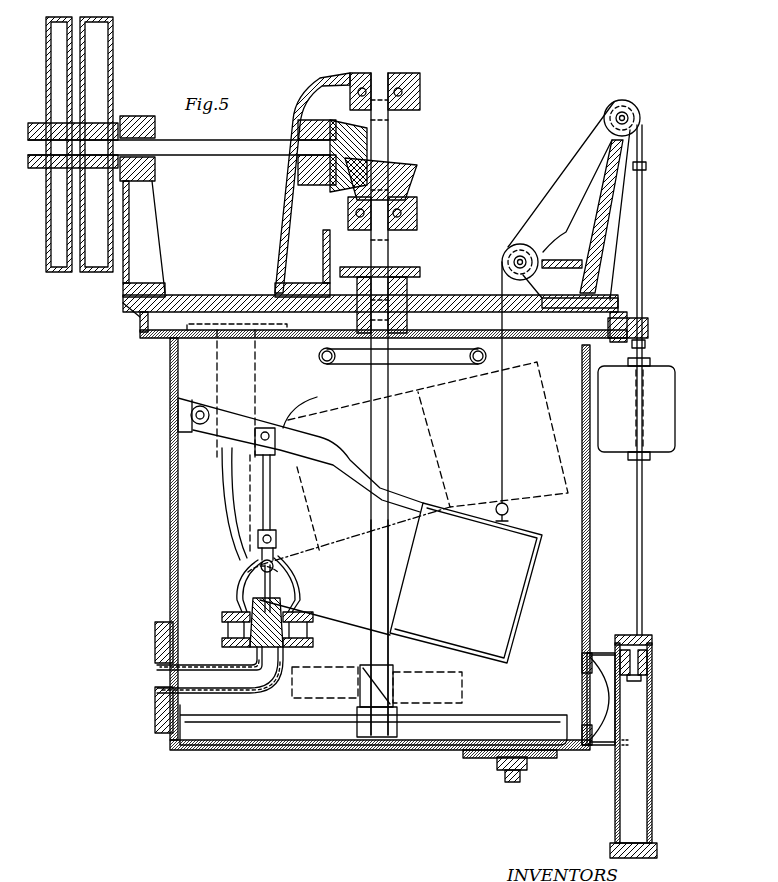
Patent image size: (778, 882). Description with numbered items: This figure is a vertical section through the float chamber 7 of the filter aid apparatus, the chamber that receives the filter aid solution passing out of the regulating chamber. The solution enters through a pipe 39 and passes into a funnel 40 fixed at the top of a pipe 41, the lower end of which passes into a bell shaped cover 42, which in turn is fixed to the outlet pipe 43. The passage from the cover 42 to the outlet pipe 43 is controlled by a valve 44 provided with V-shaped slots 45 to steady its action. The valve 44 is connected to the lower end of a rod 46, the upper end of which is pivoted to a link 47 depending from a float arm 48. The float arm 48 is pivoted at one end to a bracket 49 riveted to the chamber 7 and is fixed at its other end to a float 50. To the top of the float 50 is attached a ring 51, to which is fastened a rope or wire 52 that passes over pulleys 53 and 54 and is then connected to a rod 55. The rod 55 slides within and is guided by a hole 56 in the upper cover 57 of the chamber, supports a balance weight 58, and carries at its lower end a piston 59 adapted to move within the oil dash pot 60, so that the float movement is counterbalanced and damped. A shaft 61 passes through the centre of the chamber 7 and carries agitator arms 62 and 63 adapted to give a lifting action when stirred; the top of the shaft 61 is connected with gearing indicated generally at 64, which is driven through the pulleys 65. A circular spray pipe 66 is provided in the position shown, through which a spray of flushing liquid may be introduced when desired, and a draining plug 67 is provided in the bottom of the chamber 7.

The float chamber 7 is at (173, 487).
The pipe 39 is at (220, 388).
The funnel 40 is at (217, 440).
The pipe 41 is at (232, 533).
The bell shaped cover 42 is at (233, 593).
The outlet pipe 43 is at (197, 663).
The valve 44 is at (280, 605).
The V-shaped slots 45 is at (283, 667).
The rod 46 is at (277, 557).
The link 47 is at (245, 493).
The float arm 48 is at (283, 427).
The bracket 49 is at (190, 418).
The float 50 is at (553, 503).
The ring 51 is at (510, 512).
The rope or wire 52 is at (503, 463).
The pulley 53 is at (513, 248).
The pulley 54 is at (628, 103).
The rod 55 is at (642, 192).
The hole 56 is at (647, 323).
The upper cover 57 is at (448, 307).
The balance weight 58 is at (660, 440).
The piston 59 is at (652, 672).
The oil dash pot 60 is at (660, 750).
The shaft 61 is at (380, 568).
The agitator arm 62 is at (507, 722).
The agitator arm 63 is at (448, 690).
The gearing 64 is at (385, 404).
The pulleys 65 is at (108, 80).
The circular spray pipe 66 is at (460, 367).
The draining plug 67 is at (525, 768).